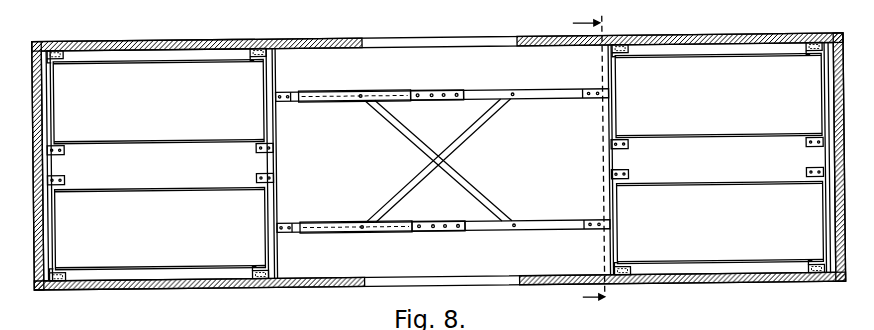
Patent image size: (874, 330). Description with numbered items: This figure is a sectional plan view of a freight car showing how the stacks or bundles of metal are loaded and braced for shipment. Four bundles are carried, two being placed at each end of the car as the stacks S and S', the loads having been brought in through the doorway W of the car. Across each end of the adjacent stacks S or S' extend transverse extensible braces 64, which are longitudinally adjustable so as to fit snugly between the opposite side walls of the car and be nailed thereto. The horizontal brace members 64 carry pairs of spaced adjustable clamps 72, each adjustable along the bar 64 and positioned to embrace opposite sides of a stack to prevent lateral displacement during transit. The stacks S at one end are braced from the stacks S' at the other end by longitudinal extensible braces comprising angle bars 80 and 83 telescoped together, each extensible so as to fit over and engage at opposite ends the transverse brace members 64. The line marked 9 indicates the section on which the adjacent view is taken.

The doorway W is at (420, 43).
The transverse extensible brace 64 is at (276, 166).
The adjustable clamp 72 is at (49, 51).
The angle bar 80 is at (525, 95).
The angle bar 83 is at (348, 94).
The section line 9 is at (594, 160).
The load S is at (719, 158).
The stack S' is at (159, 164).